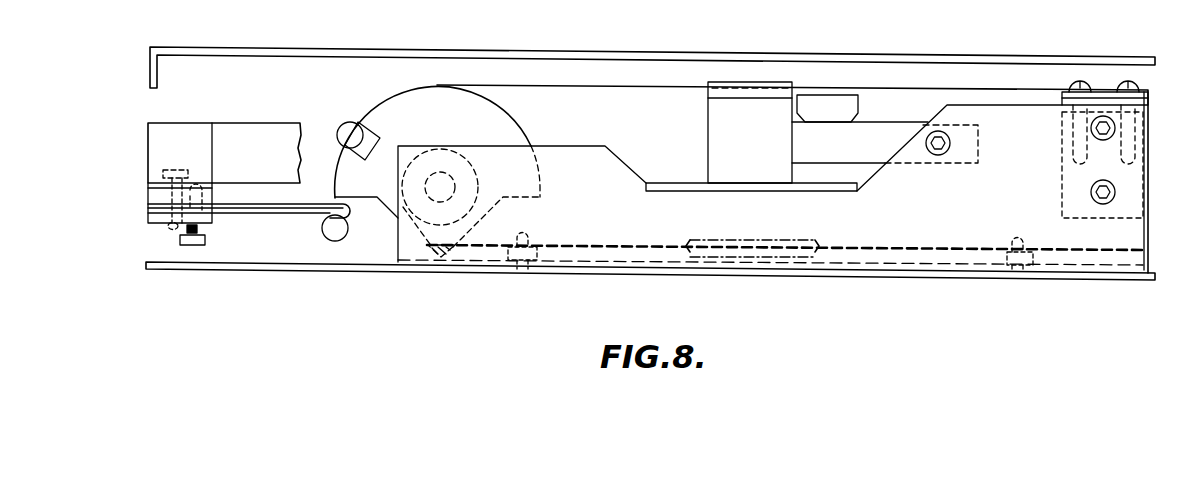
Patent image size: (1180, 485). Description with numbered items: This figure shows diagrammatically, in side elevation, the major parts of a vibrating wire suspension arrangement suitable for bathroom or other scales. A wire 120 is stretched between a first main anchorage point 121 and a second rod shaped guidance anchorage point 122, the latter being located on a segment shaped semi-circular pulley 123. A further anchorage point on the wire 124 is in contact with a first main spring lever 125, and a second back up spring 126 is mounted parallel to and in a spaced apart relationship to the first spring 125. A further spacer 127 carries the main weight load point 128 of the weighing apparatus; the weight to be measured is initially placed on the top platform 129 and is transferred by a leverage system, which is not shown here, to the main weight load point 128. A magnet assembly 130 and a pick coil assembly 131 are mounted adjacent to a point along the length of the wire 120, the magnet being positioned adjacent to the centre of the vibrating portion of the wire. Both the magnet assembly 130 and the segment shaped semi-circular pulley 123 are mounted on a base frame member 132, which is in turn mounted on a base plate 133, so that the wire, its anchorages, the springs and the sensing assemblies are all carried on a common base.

The wire 120 is at (840, 88).
The first main anchorage point 121 is at (1062, 173).
The second rod shaped guidance anchorage point 122 is at (343, 127).
The segment shaped semi-circular pulley 123 is at (520, 165).
The further anchorage point on the wire 124 is at (328, 241).
The first main spring lever 125 is at (258, 218).
The second back up spring 126 is at (148, 207).
The further spacer 127 is at (148, 190).
The main weight load point 128 is at (148, 157).
The top platform 129 is at (148, 62).
The magnet assembly 130 is at (752, 115).
The pick coil assembly 131 is at (822, 107).
The base frame member 132 is at (838, 256).
The base plate 133 is at (720, 273).